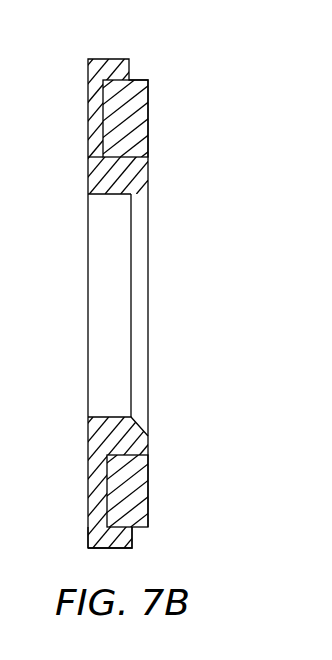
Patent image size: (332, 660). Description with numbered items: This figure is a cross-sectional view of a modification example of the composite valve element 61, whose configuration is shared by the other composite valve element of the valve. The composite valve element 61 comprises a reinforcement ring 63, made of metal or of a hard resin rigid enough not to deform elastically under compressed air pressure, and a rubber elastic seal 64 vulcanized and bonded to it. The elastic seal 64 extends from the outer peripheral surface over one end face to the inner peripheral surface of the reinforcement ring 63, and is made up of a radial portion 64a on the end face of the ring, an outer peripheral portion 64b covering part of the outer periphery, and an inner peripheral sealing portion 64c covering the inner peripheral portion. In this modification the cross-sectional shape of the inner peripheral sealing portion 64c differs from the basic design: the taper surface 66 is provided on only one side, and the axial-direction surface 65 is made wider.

The composite valve element 61 is at (150, 66).
The reinforcement ring 63 is at (138, 122).
The elastic seal 64 is at (97, 127).
The radial portion 64a is at (93, 484).
The outer peripheral portion 64b is at (93, 537).
The inner peripheral sealing portion 64c is at (93, 436).
The axial-direction surface 65 is at (110, 419).
The taper surface 66 is at (144, 175).